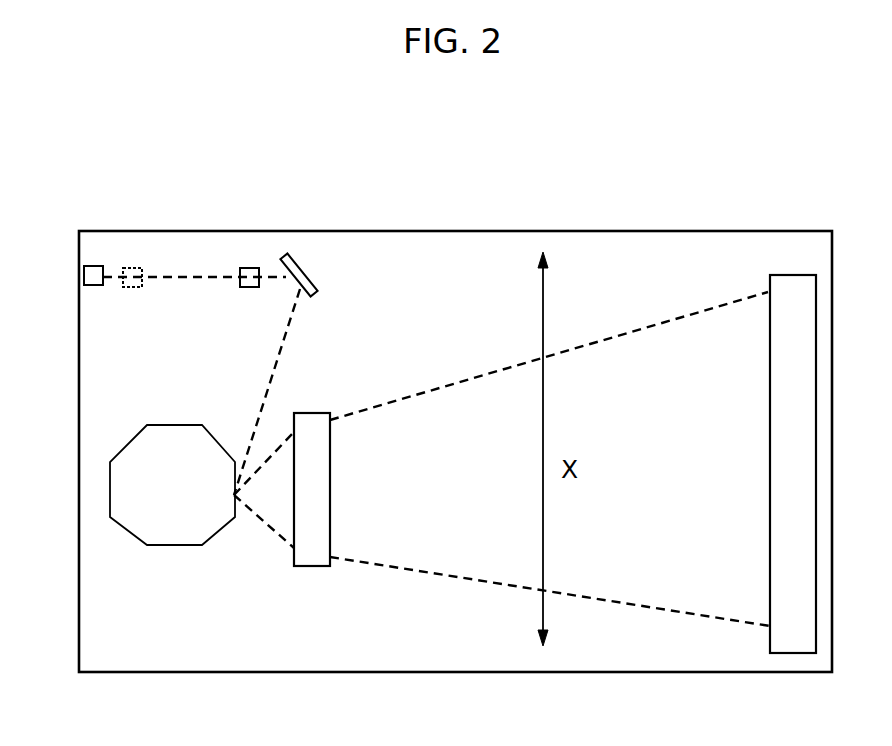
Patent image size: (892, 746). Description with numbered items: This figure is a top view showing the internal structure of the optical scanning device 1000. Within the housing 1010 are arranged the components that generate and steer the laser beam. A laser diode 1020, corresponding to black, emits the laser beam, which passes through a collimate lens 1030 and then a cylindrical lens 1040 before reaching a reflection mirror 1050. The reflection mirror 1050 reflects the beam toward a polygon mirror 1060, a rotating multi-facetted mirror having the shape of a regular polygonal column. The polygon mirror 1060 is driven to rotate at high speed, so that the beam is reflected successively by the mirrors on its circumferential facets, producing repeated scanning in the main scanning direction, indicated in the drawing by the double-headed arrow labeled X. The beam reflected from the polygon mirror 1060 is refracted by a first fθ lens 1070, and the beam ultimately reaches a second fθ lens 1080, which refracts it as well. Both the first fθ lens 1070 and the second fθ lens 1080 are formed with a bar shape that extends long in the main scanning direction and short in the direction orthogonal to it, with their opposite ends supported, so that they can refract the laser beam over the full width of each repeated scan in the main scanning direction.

The optical scanning device 1000 is at (586, 197).
The housing 1010 is at (747, 230).
The laser diode 1020 is at (93, 266).
The collimate lens 1030 is at (132, 268).
The cylindrical lens 1040 is at (251, 268).
The reflection mirror 1050 is at (304, 272).
The polygon mirror 1060 is at (128, 492).
The first fθ lens 1070 is at (310, 558).
The second fθ lens 1080 is at (786, 640).